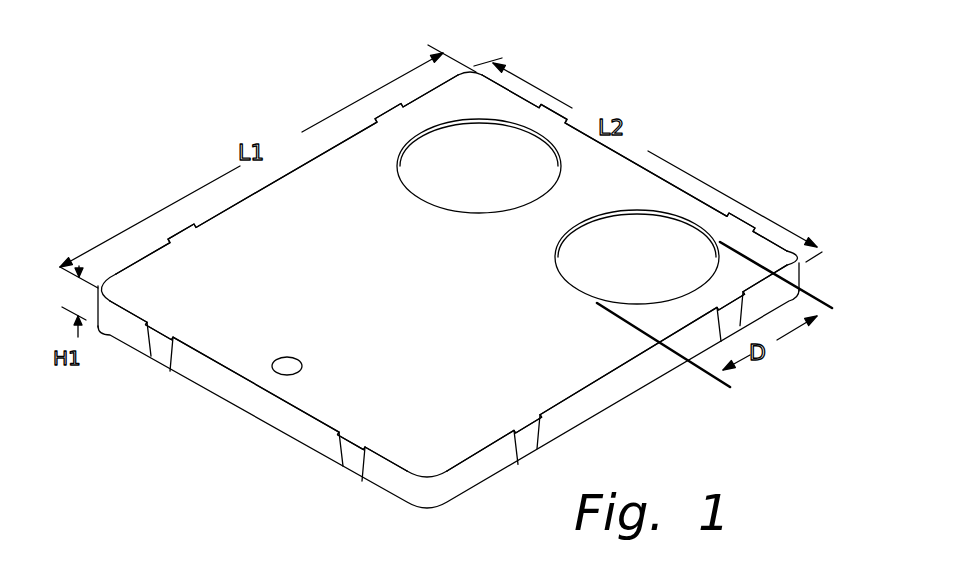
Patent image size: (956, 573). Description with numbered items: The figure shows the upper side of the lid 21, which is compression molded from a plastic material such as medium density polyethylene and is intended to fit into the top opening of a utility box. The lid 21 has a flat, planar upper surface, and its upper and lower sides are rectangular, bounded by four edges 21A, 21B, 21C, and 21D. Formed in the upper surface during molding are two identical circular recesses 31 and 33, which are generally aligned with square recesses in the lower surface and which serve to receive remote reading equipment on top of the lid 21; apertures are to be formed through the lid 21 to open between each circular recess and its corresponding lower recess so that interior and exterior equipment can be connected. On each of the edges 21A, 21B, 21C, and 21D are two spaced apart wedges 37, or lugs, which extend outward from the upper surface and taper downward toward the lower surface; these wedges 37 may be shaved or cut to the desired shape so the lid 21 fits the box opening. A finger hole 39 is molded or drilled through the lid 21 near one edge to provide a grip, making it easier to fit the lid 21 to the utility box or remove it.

The lid 21 is at (282, 467).
The edge 21A is at (248, 417).
The edge 21B is at (648, 392).
The edge 21C is at (677, 187).
The edge 21D is at (432, 98).
The circular recess 31 is at (502, 138).
The circular recess 33 is at (688, 235).
The wedge 37 is at (516, 432).
The finger hole 39 is at (290, 363).